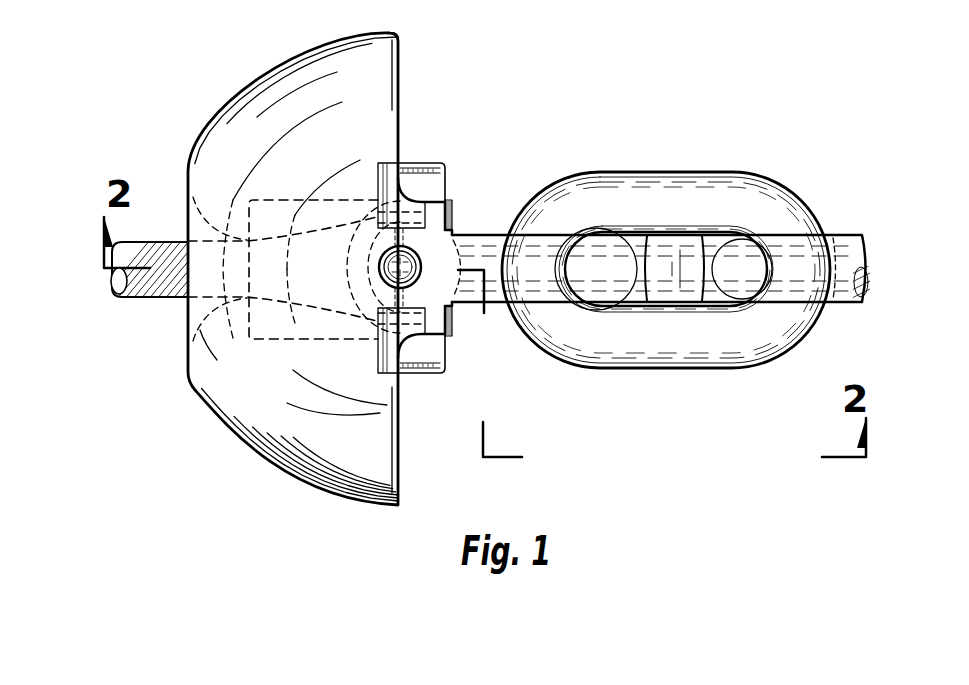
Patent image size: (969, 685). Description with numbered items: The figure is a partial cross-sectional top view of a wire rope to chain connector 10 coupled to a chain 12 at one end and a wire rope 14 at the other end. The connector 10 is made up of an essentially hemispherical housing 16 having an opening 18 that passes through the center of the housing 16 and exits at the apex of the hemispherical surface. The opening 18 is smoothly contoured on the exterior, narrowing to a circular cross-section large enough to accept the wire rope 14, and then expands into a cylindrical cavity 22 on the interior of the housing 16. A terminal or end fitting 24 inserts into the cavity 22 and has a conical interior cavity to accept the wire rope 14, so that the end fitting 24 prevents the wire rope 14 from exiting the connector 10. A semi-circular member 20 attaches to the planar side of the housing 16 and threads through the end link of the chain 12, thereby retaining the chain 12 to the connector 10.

The connector 10 is at (480, 90).
The chain 12 is at (698, 186).
The wire rope 14 is at (173, 287).
The hemispherical housing 16 is at (262, 102).
The opening 18 is at (201, 232).
The semi-circular member 20 is at (481, 241).
The cylindrical cavity 22 is at (281, 200).
The end fitting 24 is at (452, 200).